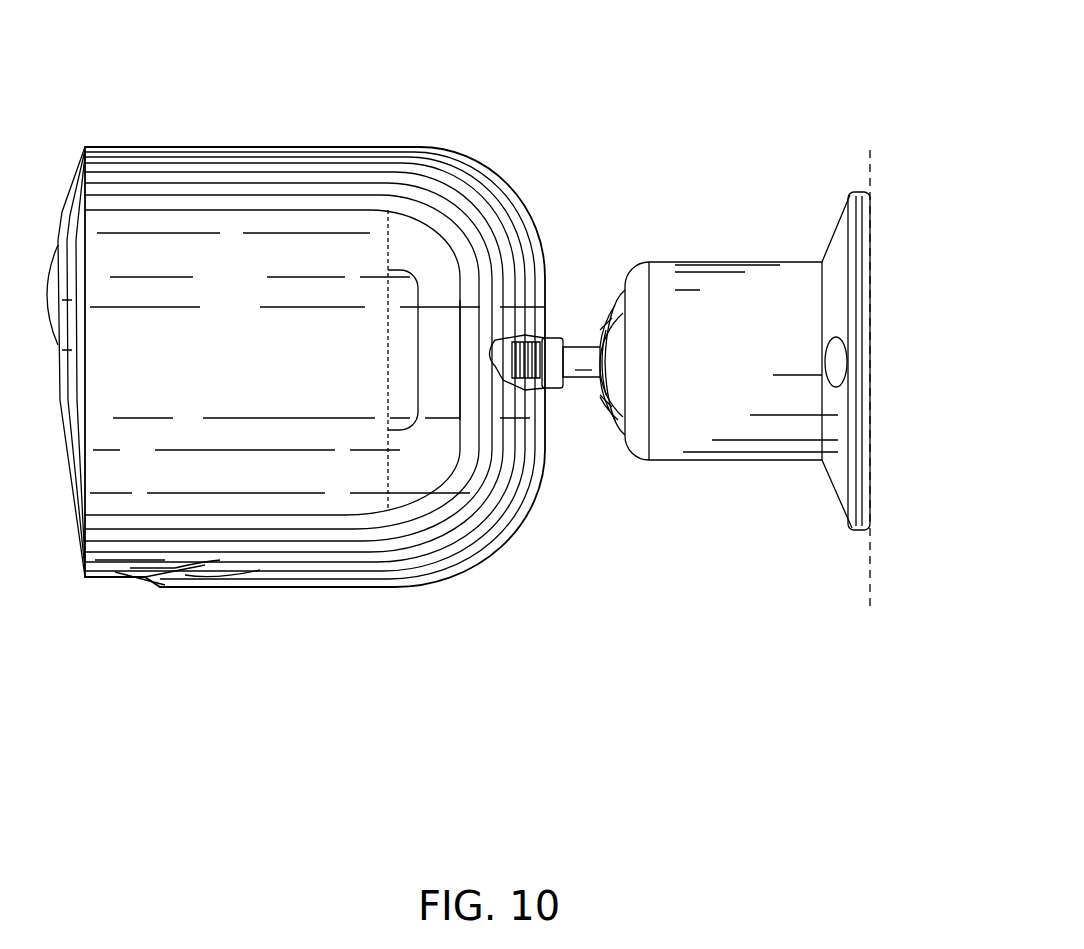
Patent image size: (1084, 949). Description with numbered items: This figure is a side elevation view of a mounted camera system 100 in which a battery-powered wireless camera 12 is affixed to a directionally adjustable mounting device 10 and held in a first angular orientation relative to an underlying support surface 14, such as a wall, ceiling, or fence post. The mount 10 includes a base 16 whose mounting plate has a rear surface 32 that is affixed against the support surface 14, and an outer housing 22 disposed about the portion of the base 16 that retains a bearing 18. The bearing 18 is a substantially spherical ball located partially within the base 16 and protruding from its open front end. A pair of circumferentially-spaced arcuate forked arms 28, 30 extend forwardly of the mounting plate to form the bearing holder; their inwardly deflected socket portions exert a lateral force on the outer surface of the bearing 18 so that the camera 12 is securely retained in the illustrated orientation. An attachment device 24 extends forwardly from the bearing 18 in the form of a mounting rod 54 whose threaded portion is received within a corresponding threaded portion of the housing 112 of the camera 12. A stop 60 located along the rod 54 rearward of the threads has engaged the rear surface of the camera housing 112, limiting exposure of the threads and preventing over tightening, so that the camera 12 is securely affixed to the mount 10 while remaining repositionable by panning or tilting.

The mounted camera system 100 is at (572, 48).
The mounting device 10 is at (723, 494).
The camera 12 is at (218, 175).
The housing 112 is at (525, 232).
The support surface 14 is at (868, 162).
The base 16 is at (845, 255).
The bearing 18 is at (620, 408).
The outer housing 22 is at (726, 290).
The attachment device 24 is at (502, 345).
The arm 28 is at (618, 300).
The arm 30 is at (618, 420).
The rear surface 32 is at (872, 250).
The rod 54 is at (582, 380).
The stop 60 is at (573, 340).